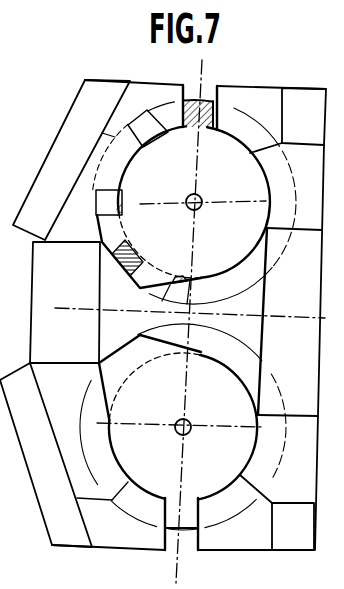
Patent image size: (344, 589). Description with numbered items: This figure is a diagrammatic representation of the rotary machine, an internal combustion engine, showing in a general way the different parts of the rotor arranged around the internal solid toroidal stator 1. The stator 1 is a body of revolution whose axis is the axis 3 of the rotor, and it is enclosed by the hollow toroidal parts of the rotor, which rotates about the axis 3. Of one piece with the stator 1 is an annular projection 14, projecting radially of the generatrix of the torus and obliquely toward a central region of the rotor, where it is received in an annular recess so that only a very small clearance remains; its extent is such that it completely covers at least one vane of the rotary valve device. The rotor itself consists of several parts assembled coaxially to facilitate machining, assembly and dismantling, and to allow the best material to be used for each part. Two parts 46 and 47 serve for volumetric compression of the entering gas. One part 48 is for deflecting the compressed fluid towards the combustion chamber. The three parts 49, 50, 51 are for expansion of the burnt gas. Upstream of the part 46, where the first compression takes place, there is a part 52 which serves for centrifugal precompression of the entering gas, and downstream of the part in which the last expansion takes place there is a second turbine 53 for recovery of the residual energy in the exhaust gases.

The stator 1 is at (218, 192).
The axis 3 is at (325, 318).
The projection 14 is at (131, 343).
The rotor part 46 is at (125, 113).
The rotor part 47 is at (60, 232).
The rotor part 48 is at (80, 301).
The rotor part 49 is at (272, 268).
The rotor part 50 is at (295, 189).
The rotor part 51 is at (268, 115).
The precompression part 52 is at (60, 157).
The second turbine 53 is at (316, 118).